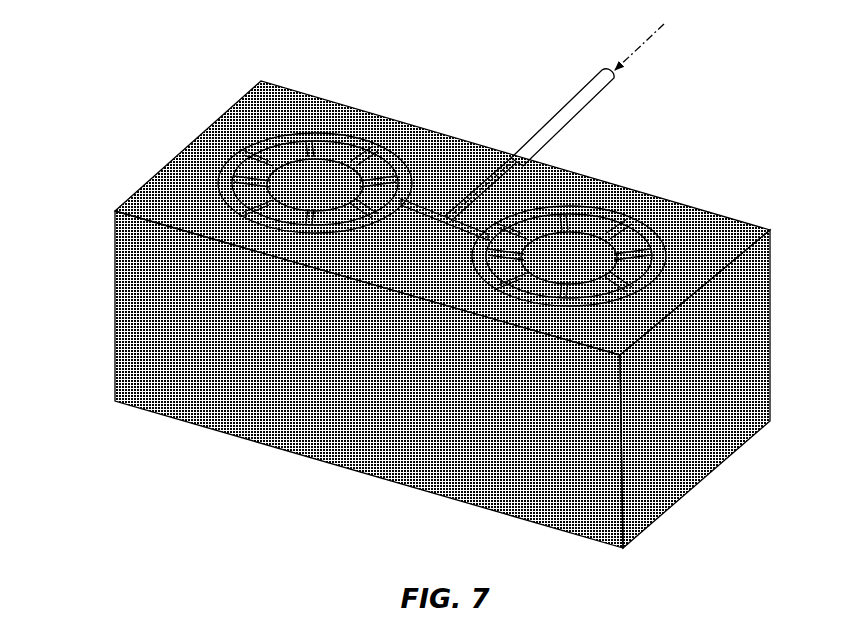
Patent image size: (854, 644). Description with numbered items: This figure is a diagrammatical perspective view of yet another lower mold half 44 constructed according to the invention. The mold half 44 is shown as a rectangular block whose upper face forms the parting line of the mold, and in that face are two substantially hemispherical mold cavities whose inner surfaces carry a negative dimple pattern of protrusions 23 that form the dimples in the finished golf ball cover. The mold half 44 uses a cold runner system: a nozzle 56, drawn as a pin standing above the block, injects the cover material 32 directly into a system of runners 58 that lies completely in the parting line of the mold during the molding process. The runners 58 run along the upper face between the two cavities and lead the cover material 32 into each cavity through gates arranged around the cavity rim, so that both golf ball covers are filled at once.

The lower mold half 44 is at (304, 402).
The protrusions 23 is at (573, 240).
The runners 58 is at (389, 178).
The nozzle 56 is at (546, 110).
The cover material 32 is at (642, 27).